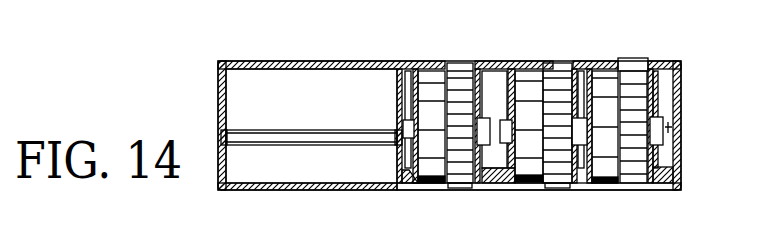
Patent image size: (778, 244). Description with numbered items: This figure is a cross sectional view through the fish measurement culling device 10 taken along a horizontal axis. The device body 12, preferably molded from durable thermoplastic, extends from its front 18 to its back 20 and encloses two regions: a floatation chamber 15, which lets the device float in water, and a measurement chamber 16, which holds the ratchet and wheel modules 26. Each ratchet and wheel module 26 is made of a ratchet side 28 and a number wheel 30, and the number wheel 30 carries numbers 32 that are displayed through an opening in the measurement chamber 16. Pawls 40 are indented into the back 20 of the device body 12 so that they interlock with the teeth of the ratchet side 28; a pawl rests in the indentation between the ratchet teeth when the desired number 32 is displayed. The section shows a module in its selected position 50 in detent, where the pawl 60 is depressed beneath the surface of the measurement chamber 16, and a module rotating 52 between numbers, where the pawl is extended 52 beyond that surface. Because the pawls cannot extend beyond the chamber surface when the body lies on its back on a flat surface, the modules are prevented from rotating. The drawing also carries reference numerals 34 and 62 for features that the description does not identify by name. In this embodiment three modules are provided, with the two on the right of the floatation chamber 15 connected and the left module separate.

The fish measurement culling device 10 is at (190, 77).
The device body 12 is at (608, 243).
The floatation chamber 15 is at (333, 88).
The measurement chamber 16 is at (608, 67).
The front 18 is at (260, 188).
The back 20 is at (250, 62).
The ratchet and wheel module 26 is at (573, 196).
The ratchet side 28 is at (455, 185).
The number wheel 30 is at (419, 83).
The numbers 32 is at (427, 102).
The end plate 34 is at (662, 128).
The pawl 40 is at (555, 68).
The selected position 50 is at (555, 174).
The rotating position 52 is at (636, 174).
The pawl 60 is at (562, 68).
The drum cap 62 is at (632, 62).